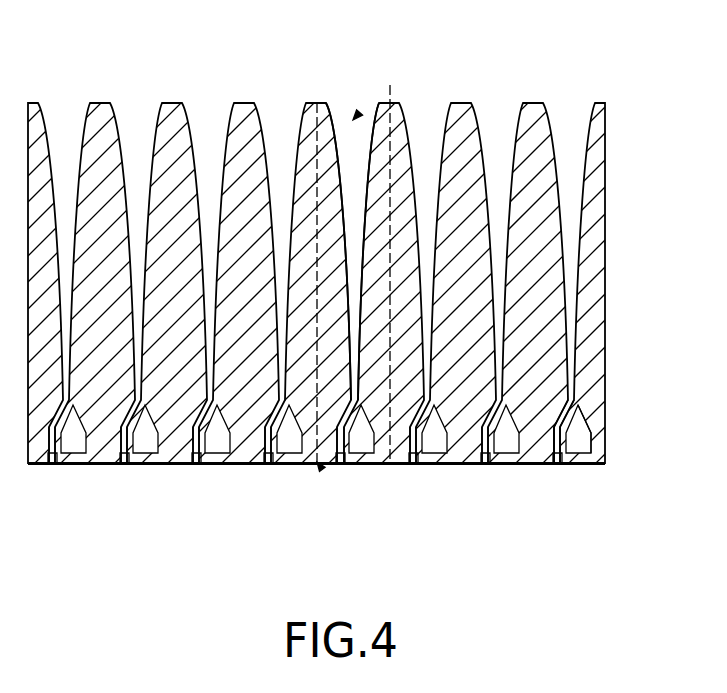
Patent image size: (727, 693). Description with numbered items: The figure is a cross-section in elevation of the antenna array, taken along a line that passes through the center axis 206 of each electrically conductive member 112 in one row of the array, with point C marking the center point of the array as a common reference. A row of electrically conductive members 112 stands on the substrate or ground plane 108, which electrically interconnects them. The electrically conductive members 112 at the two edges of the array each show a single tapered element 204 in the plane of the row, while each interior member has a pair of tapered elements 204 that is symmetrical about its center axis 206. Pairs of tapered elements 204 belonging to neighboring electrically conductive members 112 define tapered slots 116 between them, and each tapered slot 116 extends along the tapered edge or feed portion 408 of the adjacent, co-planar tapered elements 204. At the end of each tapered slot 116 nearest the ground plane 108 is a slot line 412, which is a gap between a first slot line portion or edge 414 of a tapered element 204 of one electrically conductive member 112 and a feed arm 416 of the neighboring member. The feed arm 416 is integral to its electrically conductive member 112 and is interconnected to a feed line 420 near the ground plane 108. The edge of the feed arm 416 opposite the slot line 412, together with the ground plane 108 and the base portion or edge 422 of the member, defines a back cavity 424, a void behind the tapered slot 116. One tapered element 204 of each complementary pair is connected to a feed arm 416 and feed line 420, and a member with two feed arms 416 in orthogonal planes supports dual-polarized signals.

The ground plane 108 is at (605, 462).
The electrically conductive member 112 is at (327, 120).
The tapered slot 116 is at (357, 113).
The tapered element 204 is at (297, 117).
The center axis 206 is at (317, 95).
The feed portion 408 is at (342, 188).
The slot line 412 is at (315, 447).
The first slot line portion 414 is at (540, 450).
The feed arm 416 is at (577, 457).
The feed line 420 is at (557, 460).
The base portion 422 is at (595, 413).
The back cavity 424 is at (582, 420).
The center point C is at (320, 465).